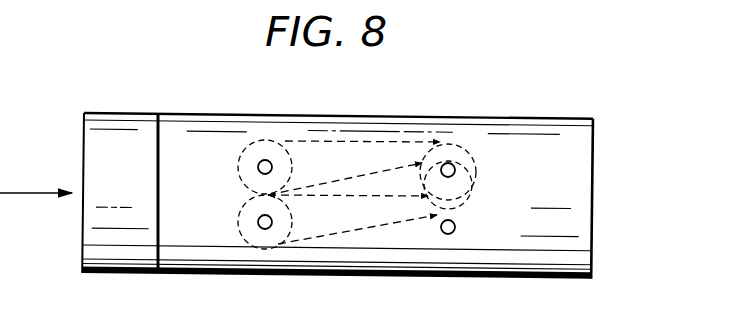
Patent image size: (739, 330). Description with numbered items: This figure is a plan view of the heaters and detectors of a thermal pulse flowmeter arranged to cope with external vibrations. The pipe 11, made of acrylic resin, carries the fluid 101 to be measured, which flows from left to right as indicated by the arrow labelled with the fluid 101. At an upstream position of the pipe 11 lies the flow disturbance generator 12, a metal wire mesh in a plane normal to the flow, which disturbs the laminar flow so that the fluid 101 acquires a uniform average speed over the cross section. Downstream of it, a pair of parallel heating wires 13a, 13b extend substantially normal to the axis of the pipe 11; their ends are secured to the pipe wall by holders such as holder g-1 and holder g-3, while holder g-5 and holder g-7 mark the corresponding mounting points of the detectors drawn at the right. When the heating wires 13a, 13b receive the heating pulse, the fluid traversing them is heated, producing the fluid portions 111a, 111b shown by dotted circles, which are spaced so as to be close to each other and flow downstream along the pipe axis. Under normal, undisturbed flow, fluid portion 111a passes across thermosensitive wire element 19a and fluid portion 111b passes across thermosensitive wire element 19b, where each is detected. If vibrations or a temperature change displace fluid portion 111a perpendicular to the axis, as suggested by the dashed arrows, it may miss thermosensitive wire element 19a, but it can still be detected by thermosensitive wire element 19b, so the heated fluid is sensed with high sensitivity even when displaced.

The pipe 11 is at (556, 118).
The flow disturbance generator 12 is at (162, 128).
The fluid 101 is at (25, 194).
The fluid portion 111a is at (238, 222).
The fluid portion 111b is at (238, 167).
The heating wire 13a is at (293, 222).
The heating wire 13b is at (293, 167).
The thermosensitive wire element 19a is at (455, 227).
The thermosensitive wire element 19b is at (455, 170).
The holder g-1 is at (252, 249).
The holder g-3 is at (252, 138).
The position g-5 is at (470, 262).
The position g-7 is at (476, 145).